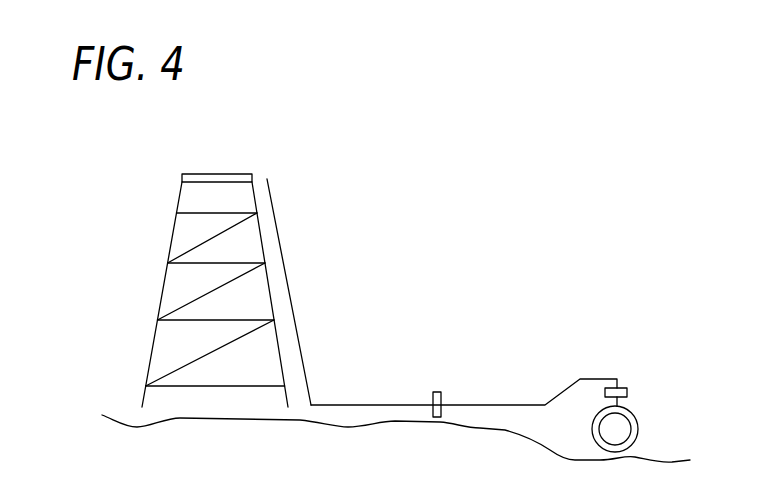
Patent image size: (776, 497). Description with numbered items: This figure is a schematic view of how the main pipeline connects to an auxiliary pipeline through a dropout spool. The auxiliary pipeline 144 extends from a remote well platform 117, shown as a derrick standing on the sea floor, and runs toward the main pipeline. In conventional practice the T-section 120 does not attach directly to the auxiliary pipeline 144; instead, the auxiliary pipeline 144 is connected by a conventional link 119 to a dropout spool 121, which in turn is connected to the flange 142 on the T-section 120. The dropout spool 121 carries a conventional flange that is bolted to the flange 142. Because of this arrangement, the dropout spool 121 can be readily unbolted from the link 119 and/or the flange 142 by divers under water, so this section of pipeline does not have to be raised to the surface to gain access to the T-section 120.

The remote well platform 117 is at (182, 178).
The auxiliary pipeline 144 is at (355, 405).
The link 119 is at (442, 405).
The dropout spool 121 is at (512, 398).
The flange 142 is at (630, 392).
The T-section 120 is at (640, 433).